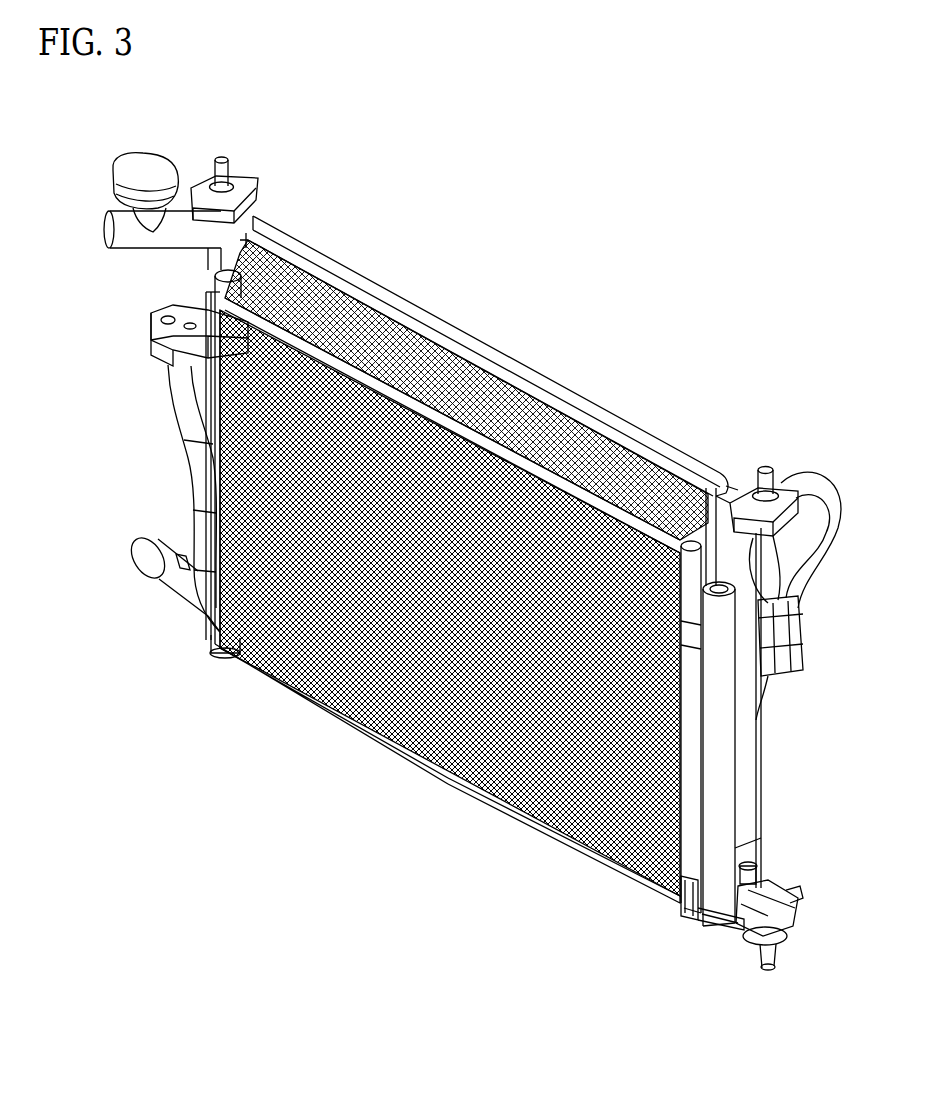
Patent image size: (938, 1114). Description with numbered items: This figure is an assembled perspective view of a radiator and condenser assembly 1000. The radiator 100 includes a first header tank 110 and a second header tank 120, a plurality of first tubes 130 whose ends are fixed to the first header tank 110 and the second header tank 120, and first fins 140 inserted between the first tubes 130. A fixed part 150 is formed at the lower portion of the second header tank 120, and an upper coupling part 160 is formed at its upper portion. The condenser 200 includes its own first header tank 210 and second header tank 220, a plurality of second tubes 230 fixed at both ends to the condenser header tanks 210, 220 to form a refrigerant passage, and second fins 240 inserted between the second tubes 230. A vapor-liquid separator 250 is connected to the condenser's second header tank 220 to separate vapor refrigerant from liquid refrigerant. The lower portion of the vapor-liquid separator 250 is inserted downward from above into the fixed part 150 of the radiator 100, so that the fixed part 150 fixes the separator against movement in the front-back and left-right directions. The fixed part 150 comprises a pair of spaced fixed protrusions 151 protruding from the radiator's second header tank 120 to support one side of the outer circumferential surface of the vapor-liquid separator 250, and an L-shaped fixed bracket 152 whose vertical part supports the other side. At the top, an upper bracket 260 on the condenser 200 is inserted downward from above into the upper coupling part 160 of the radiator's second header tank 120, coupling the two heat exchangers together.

The radiator and condenser assembly 1000 is at (628, 260).
The radiator 100 is at (376, 266).
The 1-1-th header tank 110 is at (250, 172).
The 1-2-th header tank 120 is at (722, 492).
The first tubes 130 is at (598, 423).
The first fins 140 is at (530, 382).
The fixed part 150 is at (672, 997).
The fixed protrusions 151 is at (731, 915).
The fixed bracket 152 is at (685, 925).
The upper coupling part 160 is at (792, 608).
The condenser 200 is at (418, 378).
The 2-1-th header tank 210 is at (217, 647).
The 2-2-th header tank 220 is at (694, 763).
The second tubes 230 is at (460, 767).
The second fins 240 is at (393, 727).
The vapor-liquid separator 250 is at (720, 810).
The upper bracket 260 is at (755, 652).